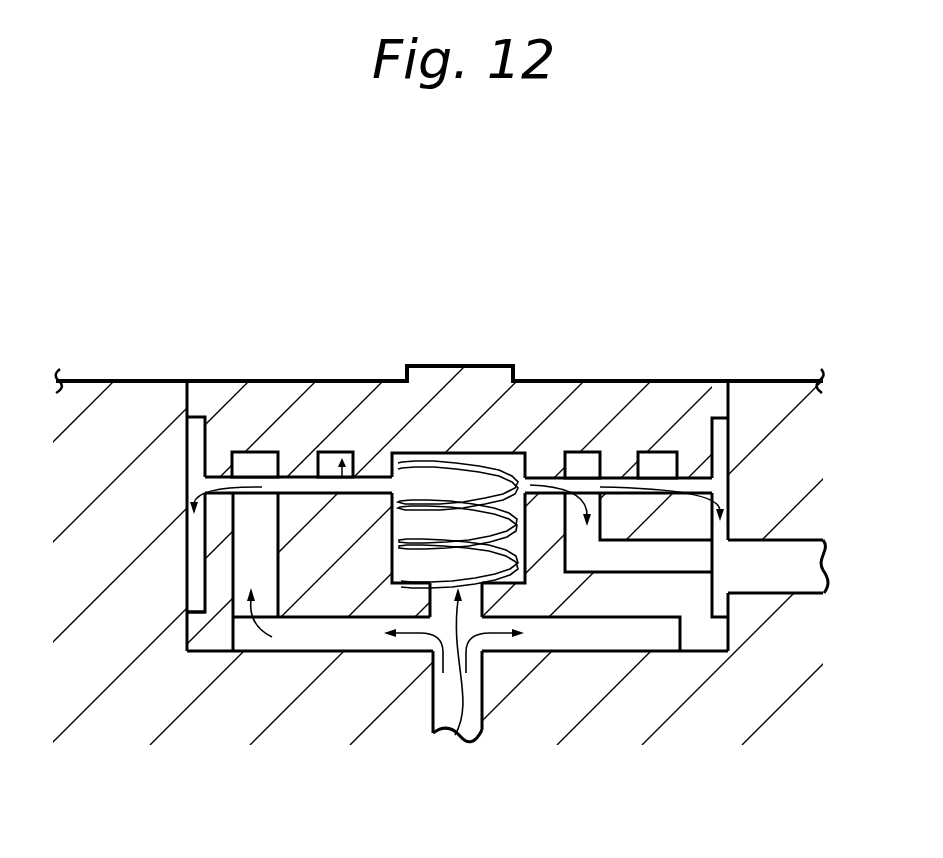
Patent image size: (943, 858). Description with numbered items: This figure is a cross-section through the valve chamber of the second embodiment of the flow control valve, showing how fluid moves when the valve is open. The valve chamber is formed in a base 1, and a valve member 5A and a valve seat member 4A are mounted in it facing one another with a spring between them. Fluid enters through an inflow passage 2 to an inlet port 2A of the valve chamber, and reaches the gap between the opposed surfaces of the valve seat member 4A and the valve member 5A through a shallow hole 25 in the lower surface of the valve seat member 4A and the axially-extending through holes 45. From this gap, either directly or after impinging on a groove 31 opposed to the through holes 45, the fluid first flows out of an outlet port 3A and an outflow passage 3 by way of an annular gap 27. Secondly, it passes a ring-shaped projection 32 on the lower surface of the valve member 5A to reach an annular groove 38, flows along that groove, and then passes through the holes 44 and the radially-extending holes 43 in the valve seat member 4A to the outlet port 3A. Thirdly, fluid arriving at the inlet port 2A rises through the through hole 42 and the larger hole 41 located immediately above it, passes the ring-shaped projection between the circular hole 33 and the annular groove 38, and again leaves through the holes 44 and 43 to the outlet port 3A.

The base 1 is at (798, 747).
The valve member 5A is at (530, 390).
The annular gap 27 is at (192, 462).
The groove 31 is at (247, 462).
The ring-shaped projection 32 is at (306, 477).
The annular groove 38 is at (334, 458).
The circular hole 33 is at (537, 454).
The holes 44 is at (712, 520).
The holes 43 is at (712, 560).
The outflow passage 3 is at (815, 582).
The outlet port 3A is at (730, 584).
The through holes 45 is at (248, 568).
The valve seat member 4A is at (185, 638).
The through hole 42 is at (440, 597).
The inflow passage 2 is at (482, 732).
The inlet port 2A is at (443, 730).
The hole 41 is at (530, 540).
The hole 25 is at (672, 648).